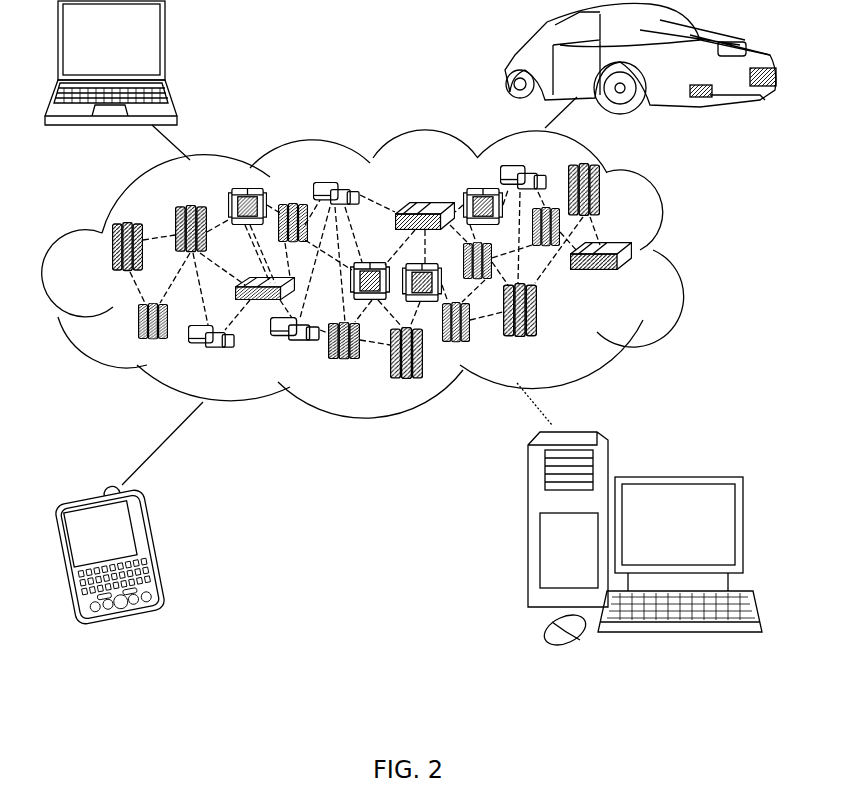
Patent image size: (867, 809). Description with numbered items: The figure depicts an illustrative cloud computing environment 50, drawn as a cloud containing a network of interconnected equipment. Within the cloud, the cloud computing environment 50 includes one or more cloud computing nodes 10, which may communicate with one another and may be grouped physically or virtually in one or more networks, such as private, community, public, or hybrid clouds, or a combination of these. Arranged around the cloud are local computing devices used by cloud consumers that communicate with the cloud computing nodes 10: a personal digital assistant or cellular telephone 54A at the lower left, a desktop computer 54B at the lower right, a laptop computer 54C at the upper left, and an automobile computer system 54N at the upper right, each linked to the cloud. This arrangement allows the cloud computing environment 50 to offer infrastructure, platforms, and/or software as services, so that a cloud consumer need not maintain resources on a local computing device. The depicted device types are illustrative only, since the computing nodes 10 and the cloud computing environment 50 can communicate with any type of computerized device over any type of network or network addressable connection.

The cloud computing nodes 10 is at (634, 280).
The cloud computing environment 50 is at (676, 262).
The personal digital assistant (PDA) or cellular telephone 54A is at (158, 546).
The desktop computer 54B is at (680, 476).
The laptop computer 54C is at (165, 48).
The automobile computer system 54N is at (505, 62).